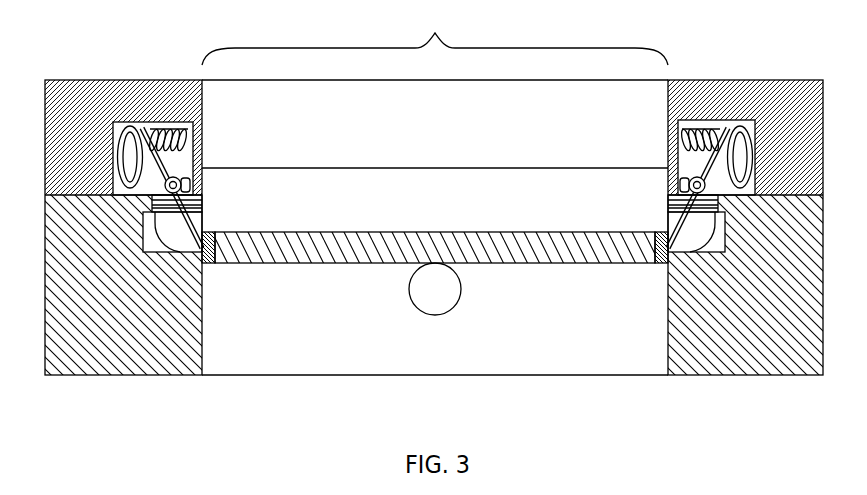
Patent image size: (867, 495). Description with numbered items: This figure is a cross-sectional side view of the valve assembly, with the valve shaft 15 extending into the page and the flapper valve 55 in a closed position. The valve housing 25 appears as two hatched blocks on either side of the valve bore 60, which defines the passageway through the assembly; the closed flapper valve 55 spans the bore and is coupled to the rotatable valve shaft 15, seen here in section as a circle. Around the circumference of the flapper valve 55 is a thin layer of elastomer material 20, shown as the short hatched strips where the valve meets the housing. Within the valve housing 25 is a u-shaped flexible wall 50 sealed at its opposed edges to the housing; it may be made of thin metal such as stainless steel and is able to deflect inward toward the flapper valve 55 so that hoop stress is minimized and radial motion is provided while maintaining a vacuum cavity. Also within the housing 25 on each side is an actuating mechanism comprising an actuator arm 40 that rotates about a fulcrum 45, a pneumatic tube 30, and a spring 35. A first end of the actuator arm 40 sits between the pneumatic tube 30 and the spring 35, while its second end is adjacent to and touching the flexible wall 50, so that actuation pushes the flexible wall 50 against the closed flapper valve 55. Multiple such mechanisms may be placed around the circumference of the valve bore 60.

The valve shaft 15 is at (459, 295).
The layer of elastomer material 20 is at (215, 250).
The valve housing 25 is at (108, 80).
The pneumatic tube 30 is at (112, 160).
The spring 35 is at (177, 130).
The actuator arm 40 is at (155, 212).
The fulcrum 45 is at (165, 197).
The flexible wall 50 is at (285, 168).
The flapper valve 55 is at (594, 263).
The valve bore 60 is at (435, 35).